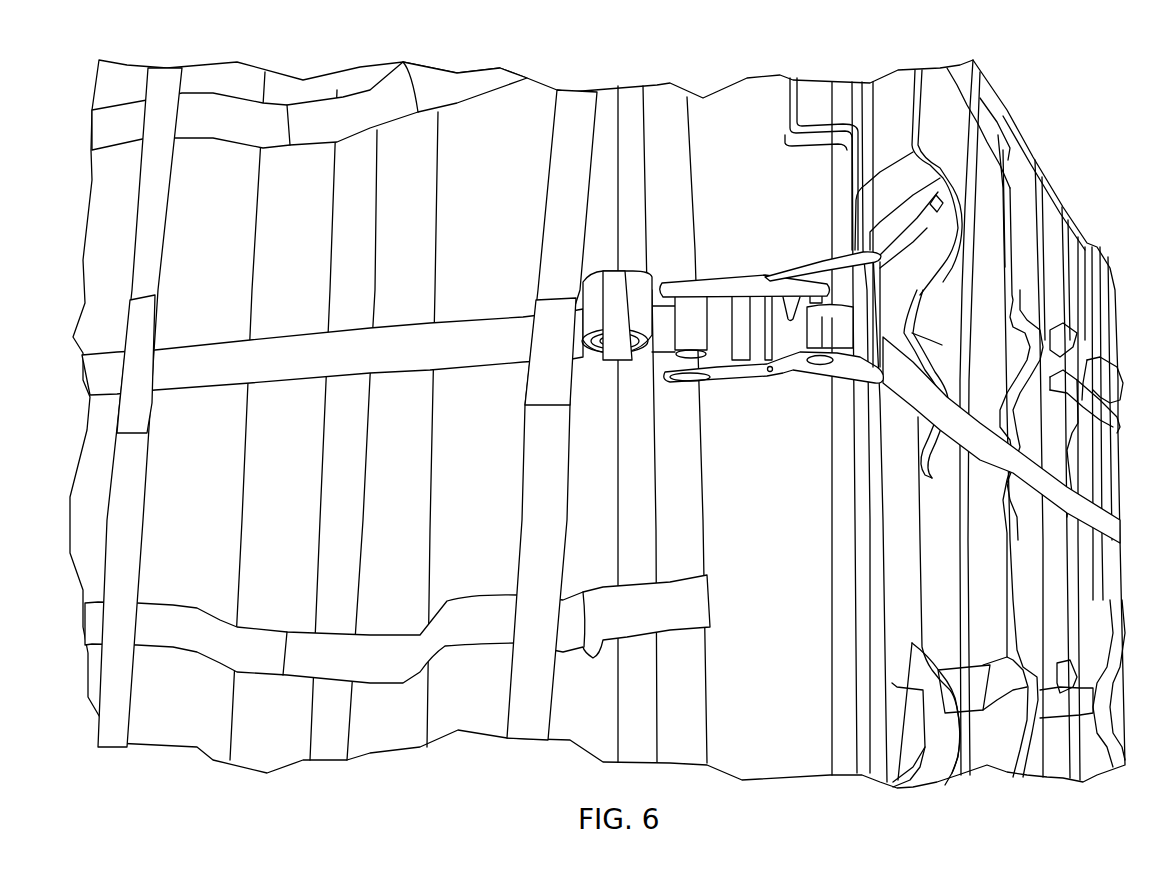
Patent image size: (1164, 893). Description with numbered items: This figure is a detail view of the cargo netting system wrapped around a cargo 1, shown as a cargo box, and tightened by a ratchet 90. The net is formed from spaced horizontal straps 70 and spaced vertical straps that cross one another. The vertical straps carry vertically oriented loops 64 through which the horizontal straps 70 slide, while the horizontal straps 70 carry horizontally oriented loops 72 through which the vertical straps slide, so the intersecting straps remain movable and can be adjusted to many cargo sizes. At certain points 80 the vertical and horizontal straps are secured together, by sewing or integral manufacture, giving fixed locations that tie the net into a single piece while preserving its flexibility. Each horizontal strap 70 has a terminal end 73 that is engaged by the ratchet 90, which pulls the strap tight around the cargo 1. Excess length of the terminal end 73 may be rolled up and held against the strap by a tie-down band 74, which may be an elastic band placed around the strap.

The cargo 1 is at (752, 107).
The vertically oriented slots or loops 64 is at (543, 330).
The horizontal straps 70 is at (193, 377).
The horizontally oriented slots or loops 72 is at (353, 117).
The terminal ends 73 is at (637, 280).
The tie-down bands 74 is at (614, 316).
The points 80 is at (162, 120).
The ratchet 90 is at (690, 280).